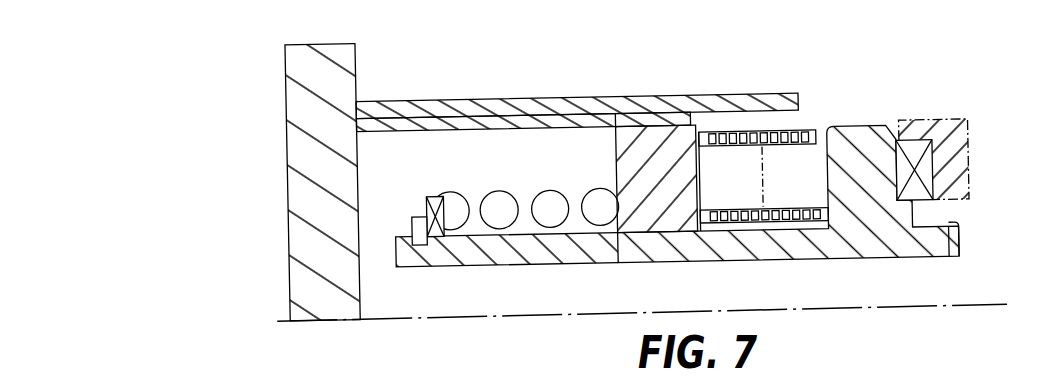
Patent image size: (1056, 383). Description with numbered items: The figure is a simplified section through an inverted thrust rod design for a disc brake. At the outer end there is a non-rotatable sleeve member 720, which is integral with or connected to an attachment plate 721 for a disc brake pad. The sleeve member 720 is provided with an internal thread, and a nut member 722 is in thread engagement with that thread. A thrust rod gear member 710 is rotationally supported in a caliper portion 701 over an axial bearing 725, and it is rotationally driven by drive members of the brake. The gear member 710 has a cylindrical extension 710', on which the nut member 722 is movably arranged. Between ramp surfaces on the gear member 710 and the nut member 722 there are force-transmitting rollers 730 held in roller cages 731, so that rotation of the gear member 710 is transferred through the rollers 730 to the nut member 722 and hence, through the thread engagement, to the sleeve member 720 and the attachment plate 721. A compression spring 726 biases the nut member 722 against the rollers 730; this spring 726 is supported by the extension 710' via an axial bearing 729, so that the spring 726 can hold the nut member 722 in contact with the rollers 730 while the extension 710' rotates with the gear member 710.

The attachment plate 721 is at (300, 91).
The sleeve member 720 is at (485, 105).
The cylindrical extension 710' is at (678, 294).
The thrust rod gear member 710 is at (787, 157).
The nut member 722 is at (652, 147).
The force-transmitting rollers 730 is at (743, 172).
The roller cages 731 is at (800, 218).
The compression spring 726 is at (555, 203).
The axial bearing 729 is at (434, 194).
The axial bearing 725 is at (915, 155).
The caliper portion 701 is at (948, 153).